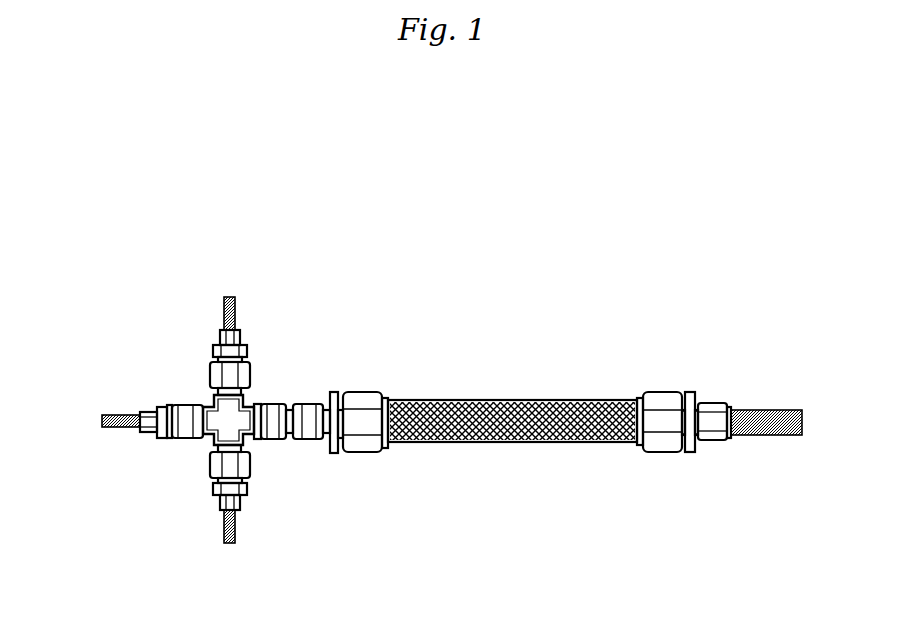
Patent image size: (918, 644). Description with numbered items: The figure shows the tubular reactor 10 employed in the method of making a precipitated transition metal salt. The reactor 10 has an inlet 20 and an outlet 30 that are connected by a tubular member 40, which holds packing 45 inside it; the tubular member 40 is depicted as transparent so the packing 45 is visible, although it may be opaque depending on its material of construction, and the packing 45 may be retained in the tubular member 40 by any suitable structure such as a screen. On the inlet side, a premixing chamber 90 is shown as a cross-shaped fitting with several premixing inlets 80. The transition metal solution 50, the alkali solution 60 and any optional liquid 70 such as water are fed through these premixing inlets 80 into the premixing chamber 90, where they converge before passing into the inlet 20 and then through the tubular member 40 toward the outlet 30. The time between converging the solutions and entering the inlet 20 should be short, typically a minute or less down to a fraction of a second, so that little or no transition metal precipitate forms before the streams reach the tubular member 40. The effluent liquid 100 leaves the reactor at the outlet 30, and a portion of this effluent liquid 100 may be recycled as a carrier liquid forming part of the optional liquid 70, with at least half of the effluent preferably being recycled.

The reactor 10 is at (118, 214).
The inlet 20 is at (386, 392).
The outlet 30 is at (639, 392).
The tubular member 40 is at (513, 446).
The packing 45 is at (557, 410).
The transition metal solution 50 is at (229, 296).
The alkali solution 60 is at (229, 544).
The optional liquid 70 is at (101, 421).
The premixing inlets 80 is at (233, 338).
The premixing chamber 90 is at (228, 412).
The effluent liquid 100 is at (803, 421).